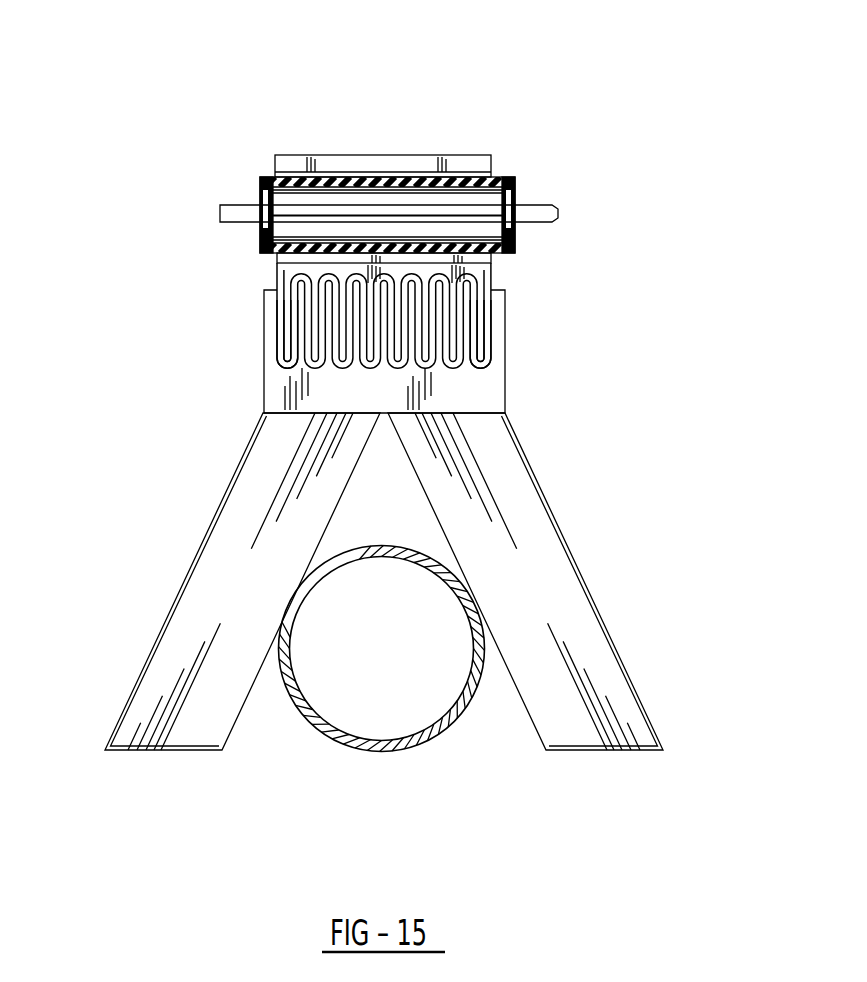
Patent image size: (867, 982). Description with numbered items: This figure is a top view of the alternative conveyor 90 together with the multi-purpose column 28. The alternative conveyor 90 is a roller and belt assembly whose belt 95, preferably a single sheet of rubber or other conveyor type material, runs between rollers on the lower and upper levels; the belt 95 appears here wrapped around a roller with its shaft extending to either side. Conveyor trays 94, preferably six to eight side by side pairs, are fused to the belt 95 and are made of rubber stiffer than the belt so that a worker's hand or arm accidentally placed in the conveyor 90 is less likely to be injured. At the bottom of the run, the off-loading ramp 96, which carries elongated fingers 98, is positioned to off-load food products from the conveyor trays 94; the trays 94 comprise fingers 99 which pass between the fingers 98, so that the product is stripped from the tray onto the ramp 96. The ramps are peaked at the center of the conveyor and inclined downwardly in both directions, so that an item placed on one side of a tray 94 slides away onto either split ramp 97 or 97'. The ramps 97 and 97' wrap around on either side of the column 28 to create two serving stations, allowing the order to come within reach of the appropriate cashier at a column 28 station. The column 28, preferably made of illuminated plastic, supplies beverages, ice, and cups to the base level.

The alternative conveyor 90 is at (530, 117).
The conveyor trays 94 is at (492, 275).
The belt 95 is at (268, 178).
The off-loading ramp 96 is at (492, 397).
The off-loading ramp 97 is at (231, 581).
The off-loading ramp 97' is at (550, 581).
The elongated fingers 98 is at (282, 347).
The fingers 99 is at (482, 333).
The multi-purpose column 28 is at (417, 708).